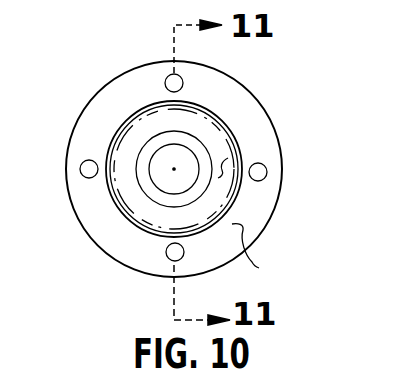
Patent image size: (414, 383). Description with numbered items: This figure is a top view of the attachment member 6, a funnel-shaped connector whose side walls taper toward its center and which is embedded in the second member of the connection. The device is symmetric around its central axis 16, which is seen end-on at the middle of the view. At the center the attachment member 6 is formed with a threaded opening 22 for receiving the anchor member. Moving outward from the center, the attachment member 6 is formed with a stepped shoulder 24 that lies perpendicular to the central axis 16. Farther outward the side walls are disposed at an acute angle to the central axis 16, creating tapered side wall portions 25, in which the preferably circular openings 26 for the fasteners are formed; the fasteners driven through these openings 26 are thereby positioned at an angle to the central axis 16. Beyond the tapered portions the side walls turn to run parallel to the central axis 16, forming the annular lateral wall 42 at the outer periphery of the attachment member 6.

The attachment member 6 is at (262, 100).
The central axis 16 is at (176, 168).
The threaded opening 22 is at (190, 145).
The stepped shoulder 24 is at (228, 158).
The tapered side wall portions 25 is at (263, 248).
The openings 26 is at (174, 83).
The lateral wall 42 is at (270, 219).